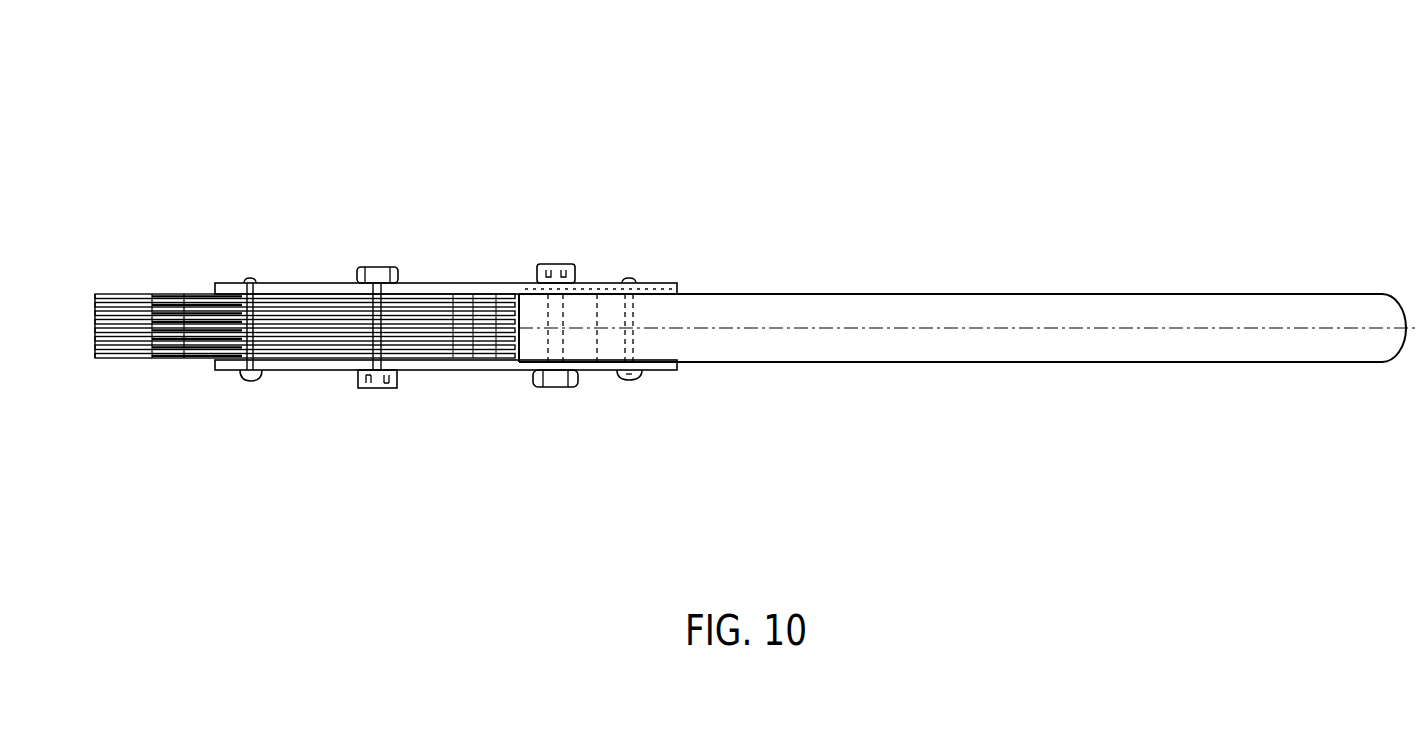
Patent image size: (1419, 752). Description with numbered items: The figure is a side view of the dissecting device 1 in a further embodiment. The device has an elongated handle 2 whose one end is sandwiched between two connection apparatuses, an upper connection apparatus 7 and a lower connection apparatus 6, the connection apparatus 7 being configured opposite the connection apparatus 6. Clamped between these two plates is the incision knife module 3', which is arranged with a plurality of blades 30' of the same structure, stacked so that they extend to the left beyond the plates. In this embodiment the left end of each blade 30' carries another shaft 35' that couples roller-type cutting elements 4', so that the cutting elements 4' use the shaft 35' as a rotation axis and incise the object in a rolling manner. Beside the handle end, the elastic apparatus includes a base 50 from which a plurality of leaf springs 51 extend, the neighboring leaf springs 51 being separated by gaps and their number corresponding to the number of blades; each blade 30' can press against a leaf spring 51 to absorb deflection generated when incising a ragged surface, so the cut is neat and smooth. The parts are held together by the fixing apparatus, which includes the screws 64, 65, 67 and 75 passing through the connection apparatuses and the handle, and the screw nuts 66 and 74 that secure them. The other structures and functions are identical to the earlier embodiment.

The dissecting device 1 is at (750, 58).
The handle 2 is at (992, 306).
The incision knife module 3' is at (305, 278).
The roller-type cutting elements 4' is at (105, 360).
The shaft 35' is at (153, 362).
The blade 30' is at (202, 360).
The connection apparatus 7 is at (448, 283).
The connection apparatus 6 is at (460, 370).
The leaf springs 51 is at (496, 283).
The base 50 is at (518, 283).
The screw 64 is at (248, 381).
The screw 65 is at (380, 388).
The screw nut 66 is at (560, 387).
The screw 67 is at (633, 380).
The screw nut 74 is at (378, 267).
The screw 75 is at (558, 264).